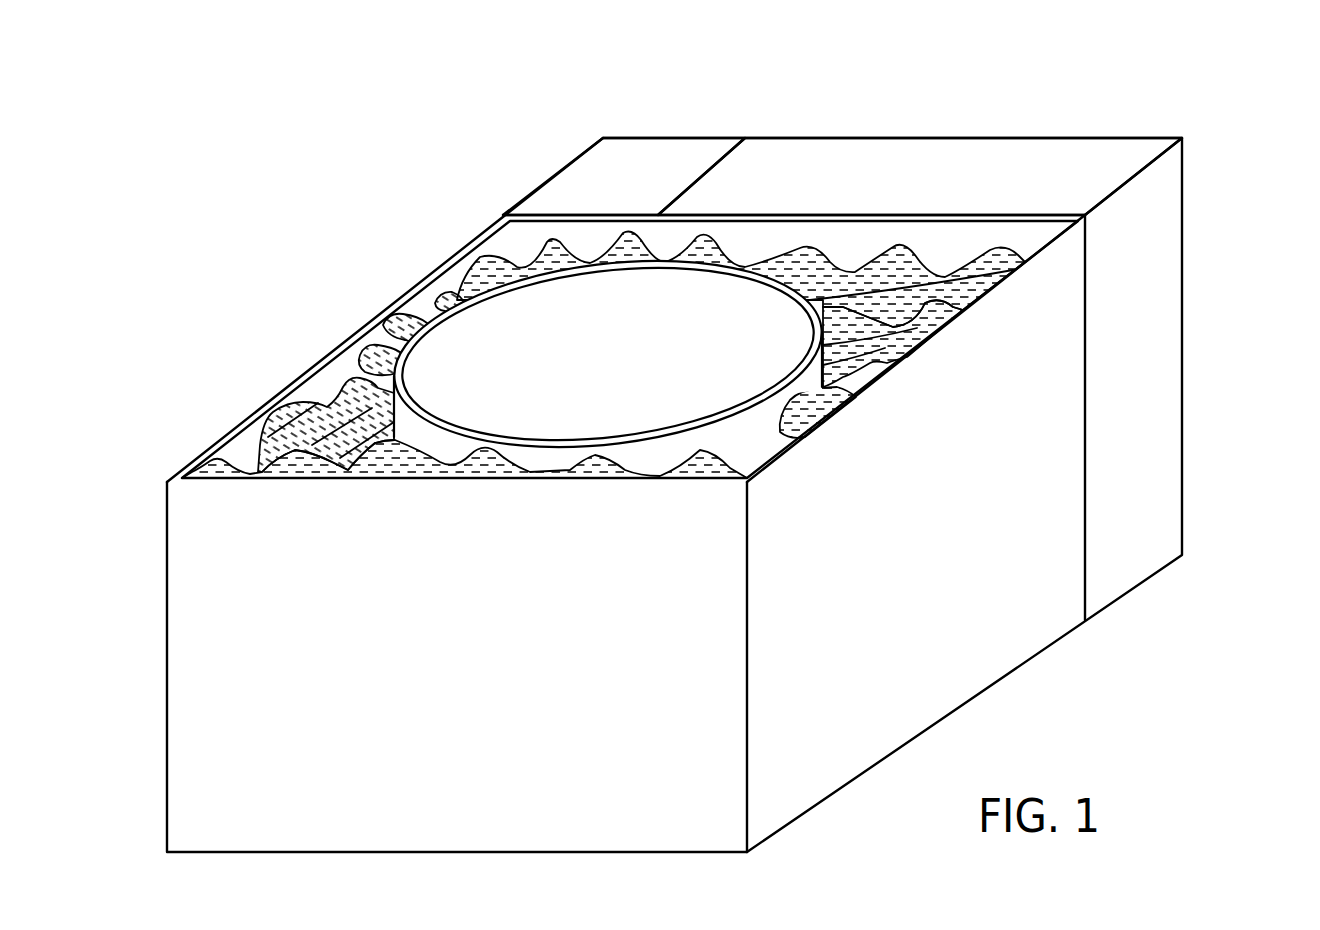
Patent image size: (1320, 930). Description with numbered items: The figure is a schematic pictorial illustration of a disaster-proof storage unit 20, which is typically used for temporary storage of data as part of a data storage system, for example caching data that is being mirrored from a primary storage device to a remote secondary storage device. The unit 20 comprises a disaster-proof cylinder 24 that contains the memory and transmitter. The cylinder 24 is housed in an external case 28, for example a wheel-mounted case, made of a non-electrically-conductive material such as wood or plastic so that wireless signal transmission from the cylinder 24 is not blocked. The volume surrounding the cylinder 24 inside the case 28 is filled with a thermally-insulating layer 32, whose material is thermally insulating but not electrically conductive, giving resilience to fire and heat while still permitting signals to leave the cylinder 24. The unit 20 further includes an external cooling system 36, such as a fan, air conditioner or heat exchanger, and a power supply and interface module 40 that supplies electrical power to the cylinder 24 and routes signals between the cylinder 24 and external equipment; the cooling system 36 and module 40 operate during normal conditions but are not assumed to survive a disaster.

The disaster-proof storage unit 20 is at (1212, 123).
The disaster-proof cylinder 24 is at (442, 350).
The external case 28 is at (203, 613).
The thermally-insulating layer 32 is at (603, 354).
The external cooling system 36 is at (898, 168).
The power supply and interface module 40 is at (658, 158).